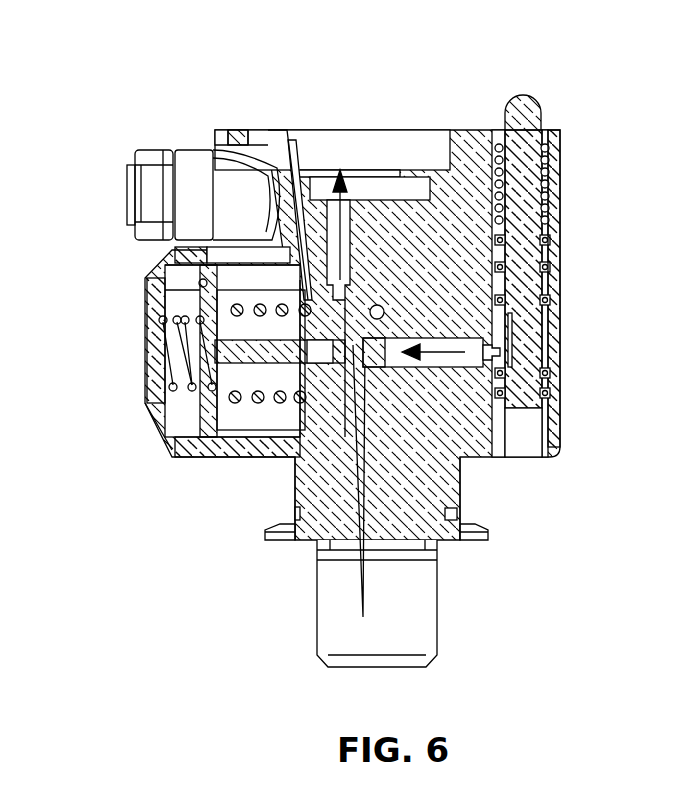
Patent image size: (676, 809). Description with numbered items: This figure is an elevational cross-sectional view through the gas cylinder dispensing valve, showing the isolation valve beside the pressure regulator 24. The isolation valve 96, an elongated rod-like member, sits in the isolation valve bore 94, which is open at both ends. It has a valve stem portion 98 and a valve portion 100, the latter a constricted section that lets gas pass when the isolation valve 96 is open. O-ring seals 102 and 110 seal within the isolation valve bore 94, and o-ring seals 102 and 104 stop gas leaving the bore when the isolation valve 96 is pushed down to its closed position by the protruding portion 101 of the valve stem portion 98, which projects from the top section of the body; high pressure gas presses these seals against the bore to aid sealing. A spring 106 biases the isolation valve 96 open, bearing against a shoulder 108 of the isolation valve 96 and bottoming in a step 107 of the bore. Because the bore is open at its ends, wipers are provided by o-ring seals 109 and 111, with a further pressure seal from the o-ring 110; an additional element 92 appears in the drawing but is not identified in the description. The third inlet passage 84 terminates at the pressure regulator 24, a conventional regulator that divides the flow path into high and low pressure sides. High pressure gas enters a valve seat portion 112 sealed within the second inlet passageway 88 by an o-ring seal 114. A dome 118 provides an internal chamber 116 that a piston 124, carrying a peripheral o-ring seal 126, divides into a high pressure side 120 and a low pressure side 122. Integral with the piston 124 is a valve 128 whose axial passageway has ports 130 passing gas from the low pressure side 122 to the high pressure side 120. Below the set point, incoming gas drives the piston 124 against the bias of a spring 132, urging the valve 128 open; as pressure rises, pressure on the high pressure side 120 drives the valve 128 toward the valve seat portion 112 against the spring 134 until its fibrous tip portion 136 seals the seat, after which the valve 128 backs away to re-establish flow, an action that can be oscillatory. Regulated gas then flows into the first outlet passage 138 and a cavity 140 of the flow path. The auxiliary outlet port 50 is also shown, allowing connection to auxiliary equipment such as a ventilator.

The pressure regulator 24 is at (153, 408).
The auxiliary outlet port 50 is at (148, 228).
The third inlet passage 84 is at (480, 342).
The second inlet passageway 88 is at (472, 370).
The seal 92 is at (540, 370).
The isolation valve bore 94 is at (537, 248).
The isolation valve 96 is at (533, 100).
The valve stem portion 98 is at (527, 193).
The valve portion 100 is at (507, 353).
The protruding portion 101 is at (545, 112).
The o-ring seal 102 is at (553, 270).
The o-ring seal 104 is at (512, 313).
The spring 106 is at (497, 148).
The step 107 is at (552, 222).
The shoulder 108 is at (521, 97).
The o-ring seal 109 is at (535, 240).
The o-ring seal 110 is at (543, 383).
The o-ring seal 111 is at (560, 433).
The valve seat portion 112 is at (296, 384).
The o-ring seal 114 is at (347, 445).
The internal chamber 116 is at (255, 398).
The dome 118 is at (200, 432).
The high pressure side 120 is at (183, 417).
The low pressure side 122 is at (205, 258).
The piston 124 is at (232, 402).
The peripheral o-ring seal 126 is at (200, 286).
The valve 128 is at (262, 300).
The ports 130 is at (322, 372).
The spring 132 is at (165, 383).
The spring 134 is at (318, 355).
The fibrous tip portion 136 is at (325, 330).
The first outlet passage 138 is at (343, 225).
The cavity 140 is at (497, 160).